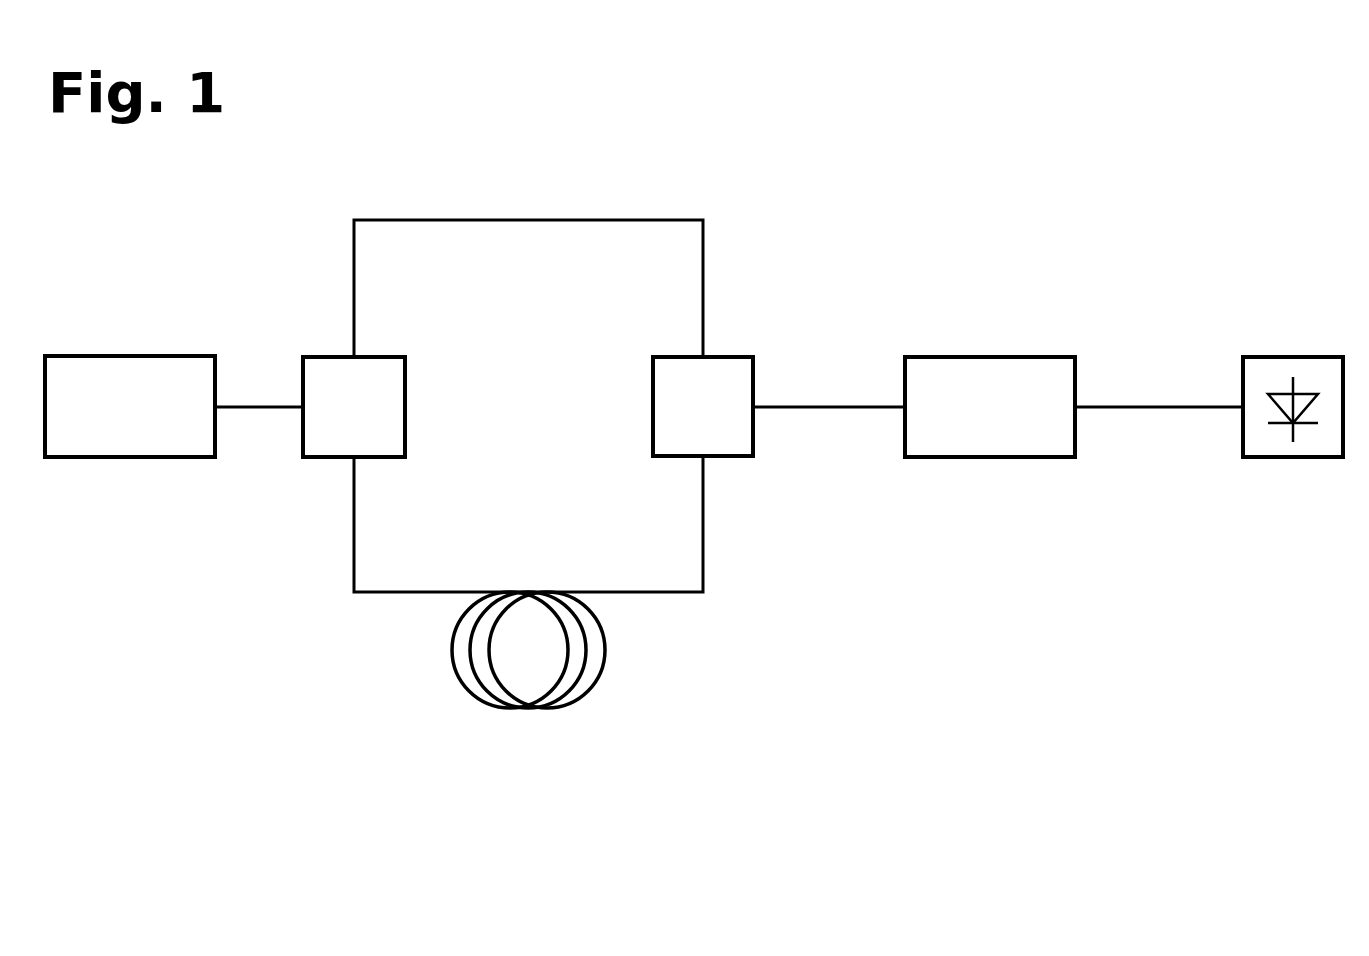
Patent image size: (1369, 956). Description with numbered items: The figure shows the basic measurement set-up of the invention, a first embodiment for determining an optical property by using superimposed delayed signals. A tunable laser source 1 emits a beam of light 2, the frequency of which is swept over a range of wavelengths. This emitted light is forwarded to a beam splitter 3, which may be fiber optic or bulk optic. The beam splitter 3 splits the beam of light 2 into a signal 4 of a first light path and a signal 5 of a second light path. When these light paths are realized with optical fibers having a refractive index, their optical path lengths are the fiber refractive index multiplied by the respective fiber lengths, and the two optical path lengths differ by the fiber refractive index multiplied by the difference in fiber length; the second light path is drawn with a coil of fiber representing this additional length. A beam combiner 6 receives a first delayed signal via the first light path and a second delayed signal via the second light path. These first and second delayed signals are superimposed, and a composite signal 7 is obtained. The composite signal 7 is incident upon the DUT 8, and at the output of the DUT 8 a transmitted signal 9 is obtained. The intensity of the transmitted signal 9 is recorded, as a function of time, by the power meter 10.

The tunable laser source 1 is at (121, 440).
The beam of light 2 is at (258, 405).
The beam splitter 3 is at (331, 443).
The signal of a first light path 4 is at (537, 218).
The signal of a second light path 5 is at (391, 595).
The beam combiner 6 is at (722, 437).
The composite signal 7 is at (820, 405).
The DUT 8 is at (993, 445).
The transmitted signal 9 is at (1153, 405).
The power meter 10 is at (1304, 445).